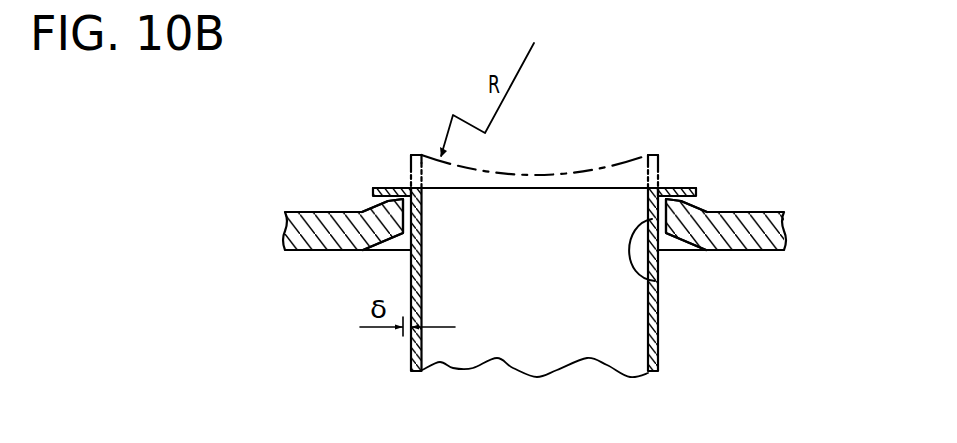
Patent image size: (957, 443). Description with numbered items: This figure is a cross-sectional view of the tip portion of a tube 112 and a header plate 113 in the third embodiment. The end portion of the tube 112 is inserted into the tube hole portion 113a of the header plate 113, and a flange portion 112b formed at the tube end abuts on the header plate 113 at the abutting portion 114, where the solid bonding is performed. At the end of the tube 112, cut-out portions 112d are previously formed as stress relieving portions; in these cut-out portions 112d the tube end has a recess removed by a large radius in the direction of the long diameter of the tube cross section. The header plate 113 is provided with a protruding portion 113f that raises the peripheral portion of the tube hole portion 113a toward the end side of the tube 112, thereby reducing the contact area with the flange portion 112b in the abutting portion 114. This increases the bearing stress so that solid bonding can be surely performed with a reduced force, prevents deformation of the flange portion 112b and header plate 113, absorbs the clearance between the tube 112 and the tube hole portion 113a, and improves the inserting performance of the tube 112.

The tube 112 is at (655, 341).
The flange portion 112b is at (387, 188).
The cut-out portion 112d is at (430, 153).
The header plate 113 is at (306, 225).
The tube hole portion 113a is at (655, 283).
The protruding portion 113f is at (358, 207).
The abutting portion 114 is at (679, 190).